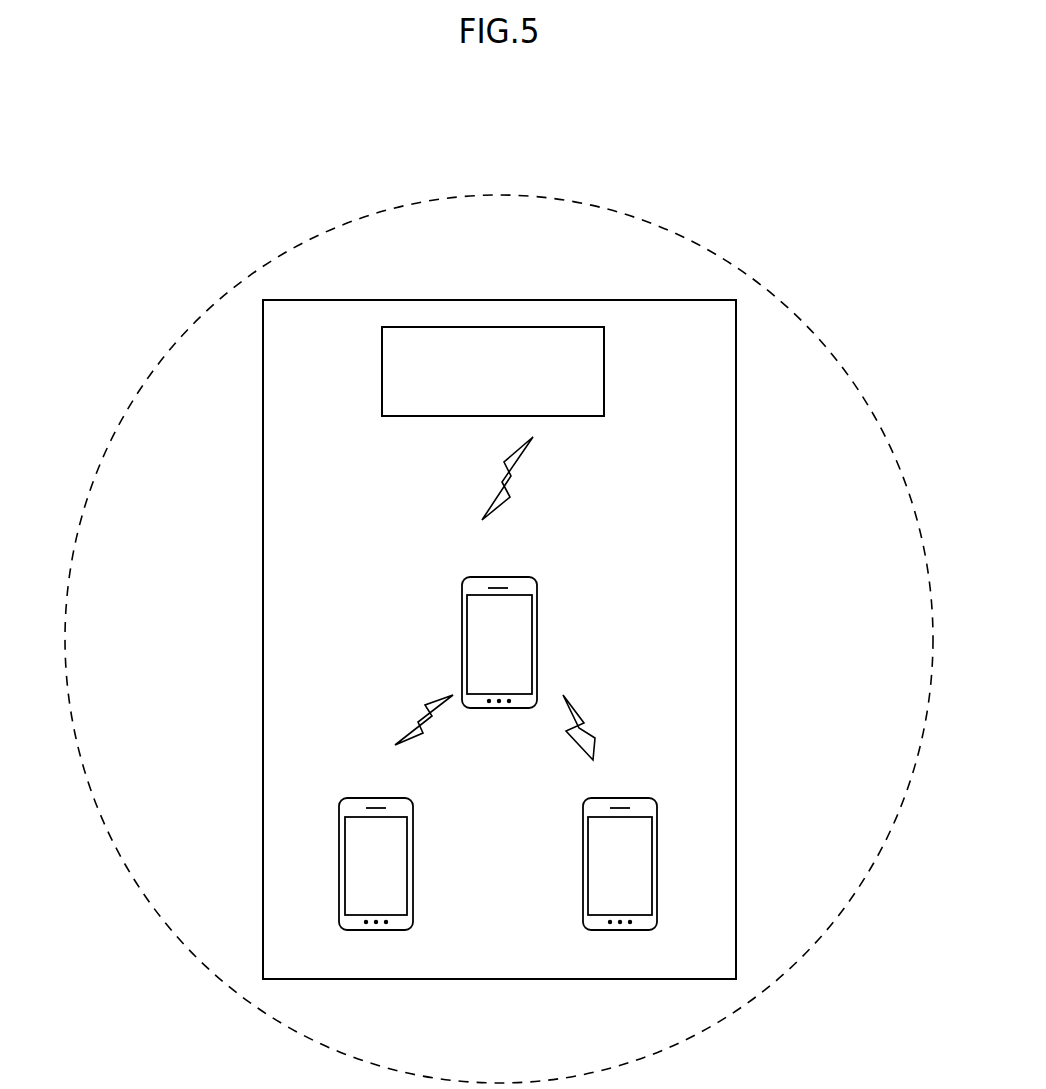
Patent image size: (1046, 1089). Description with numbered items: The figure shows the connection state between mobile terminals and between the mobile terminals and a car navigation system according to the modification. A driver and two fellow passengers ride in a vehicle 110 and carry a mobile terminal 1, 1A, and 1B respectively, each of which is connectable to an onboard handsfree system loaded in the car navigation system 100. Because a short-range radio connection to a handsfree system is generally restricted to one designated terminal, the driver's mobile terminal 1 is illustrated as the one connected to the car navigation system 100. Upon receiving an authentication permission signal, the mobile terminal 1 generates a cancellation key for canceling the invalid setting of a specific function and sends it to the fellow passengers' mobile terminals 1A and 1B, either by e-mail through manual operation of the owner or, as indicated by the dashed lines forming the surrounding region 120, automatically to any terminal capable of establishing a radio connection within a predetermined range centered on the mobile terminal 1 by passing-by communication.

The mobile terminal 1 is at (498, 577).
The mobile terminal 1A is at (618, 798).
The mobile terminal 1B is at (373, 798).
The car navigation system 100 is at (605, 381).
The vehicle 110 is at (737, 545).
The communication area 120 is at (822, 344).